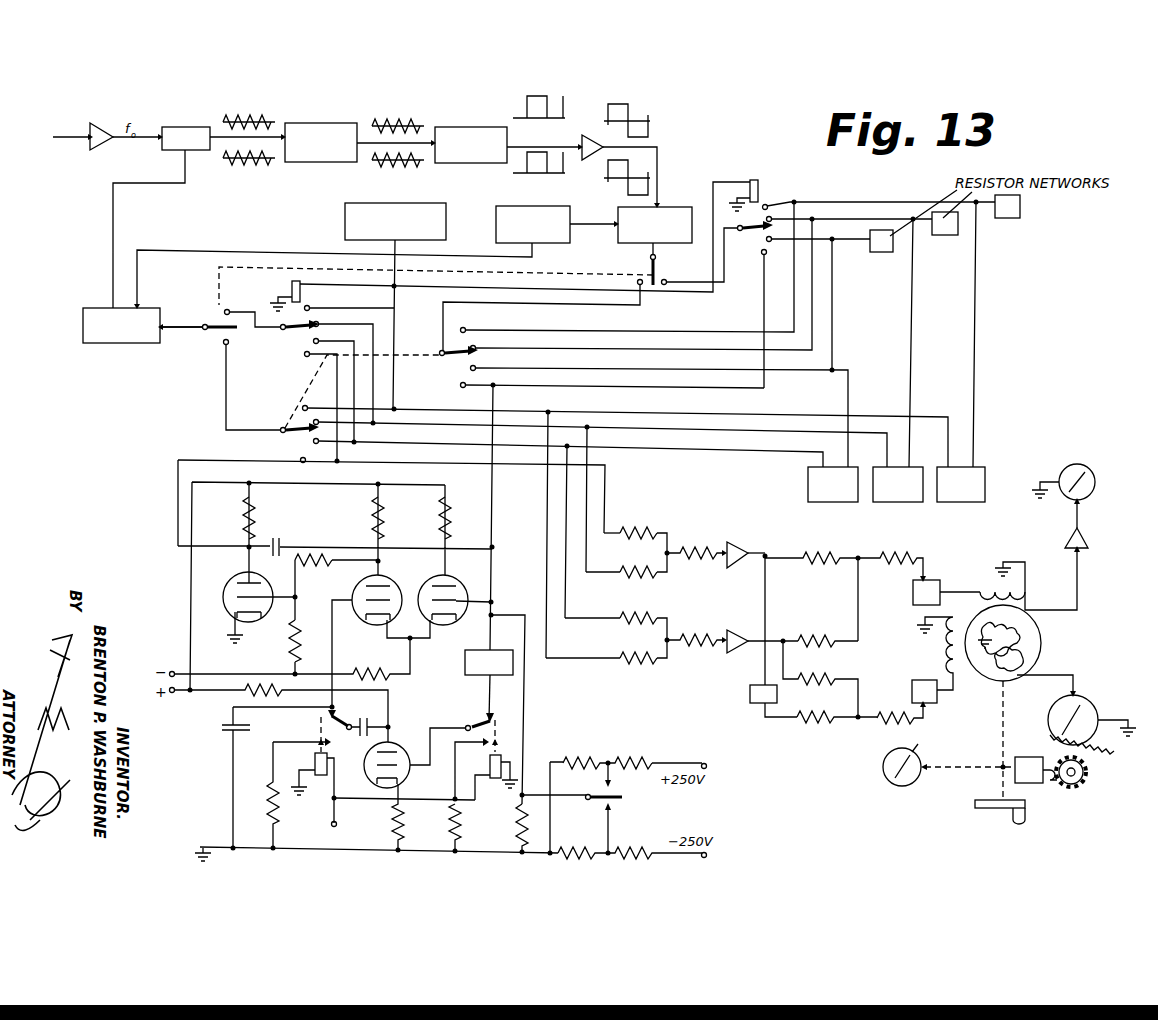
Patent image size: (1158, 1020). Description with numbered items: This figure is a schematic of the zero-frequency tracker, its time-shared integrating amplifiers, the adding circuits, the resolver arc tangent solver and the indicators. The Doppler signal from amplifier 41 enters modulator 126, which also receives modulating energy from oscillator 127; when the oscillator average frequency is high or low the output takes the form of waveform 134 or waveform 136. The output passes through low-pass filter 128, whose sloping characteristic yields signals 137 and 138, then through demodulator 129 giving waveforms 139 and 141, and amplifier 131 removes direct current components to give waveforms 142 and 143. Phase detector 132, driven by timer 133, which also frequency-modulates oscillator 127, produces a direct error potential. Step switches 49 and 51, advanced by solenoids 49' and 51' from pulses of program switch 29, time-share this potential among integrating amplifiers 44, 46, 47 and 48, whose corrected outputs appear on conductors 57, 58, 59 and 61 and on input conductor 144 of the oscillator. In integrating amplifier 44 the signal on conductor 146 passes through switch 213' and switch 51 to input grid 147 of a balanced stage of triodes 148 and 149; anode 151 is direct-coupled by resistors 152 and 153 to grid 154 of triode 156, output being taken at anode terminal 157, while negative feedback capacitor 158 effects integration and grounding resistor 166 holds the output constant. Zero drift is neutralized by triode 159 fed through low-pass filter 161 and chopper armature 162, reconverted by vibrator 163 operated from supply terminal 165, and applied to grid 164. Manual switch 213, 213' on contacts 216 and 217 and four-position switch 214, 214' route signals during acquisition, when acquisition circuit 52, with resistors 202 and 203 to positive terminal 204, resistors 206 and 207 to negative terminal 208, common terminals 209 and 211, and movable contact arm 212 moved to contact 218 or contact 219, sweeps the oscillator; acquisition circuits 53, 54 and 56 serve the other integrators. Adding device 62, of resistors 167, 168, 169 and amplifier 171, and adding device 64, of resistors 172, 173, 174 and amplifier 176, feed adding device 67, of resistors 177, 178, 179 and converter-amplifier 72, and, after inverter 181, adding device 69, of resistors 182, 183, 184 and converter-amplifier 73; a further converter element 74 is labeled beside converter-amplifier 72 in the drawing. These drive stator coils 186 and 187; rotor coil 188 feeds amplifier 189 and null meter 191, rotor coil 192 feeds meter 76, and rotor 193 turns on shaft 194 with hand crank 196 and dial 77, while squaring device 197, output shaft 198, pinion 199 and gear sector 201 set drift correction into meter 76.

The amplifier 41 is at (112, 126).
The modulator 126 is at (190, 122).
The waveform 134 is at (232, 116).
The waveform 136 is at (230, 168).
The low-pass filter 128 is at (331, 116).
The waveform 137 is at (410, 114).
The waveform 138 is at (376, 178).
The demodulator 129 is at (489, 116).
The waveform 139 is at (522, 100).
The waveform 141 is at (550, 174).
The waveform 142 is at (642, 102).
The waveform 143 is at (612, 186).
The amplifier 131 is at (604, 134).
The phase detector 132 is at (668, 208).
The timer 133 is at (524, 200).
The program switch 29 is at (344, 215).
The oscillator 127 is at (101, 307).
The input conductor 144 is at (204, 323).
The switch 213 is at (208, 338).
The contact 216 is at (229, 342).
The step switch 49 is at (303, 332).
The solenoid 49' is at (279, 294).
The manual four-position switch 214 is at (295, 435).
The manual four-position switch 214' is at (451, 358).
The contact 217 is at (638, 285).
The switch 213' is at (674, 272).
The input conductor 146 is at (657, 255).
The step switch 51 is at (757, 231).
The solenoid 51' is at (748, 184).
The acquisition circuit 53 is at (884, 255).
The acquisition circuit 54 is at (954, 238).
The acquisition circuit 56 is at (1014, 222).
The integrating amplifier 46 is at (834, 504).
The integrating amplifier 47 is at (901, 504).
The integrating amplifier 48 is at (964, 504).
The integrating amplifier 44 is at (170, 597).
The triode 156 is at (225, 589).
The anode terminal 157 is at (246, 553).
The negative feedback capacitor 158 is at (285, 532).
The resistor 152 is at (334, 564).
The anode 151 is at (374, 577).
The triode 149 is at (404, 585).
The input grid 147 is at (478, 583).
The triode 148 is at (450, 618).
The grid 154 is at (280, 605).
The resistor 153 is at (290, 653).
The grid 164 is at (348, 617).
The low-pass filter 161 is at (465, 661).
The triode 159 is at (422, 740).
The vibrator 163 is at (347, 721).
The chopper armature 162 is at (494, 716).
The supply terminal 165 is at (346, 824).
The grounding resistor 166 is at (518, 835).
The conductor 57 is at (605, 494).
The conductor 58 is at (566, 618).
The conductor 59 is at (592, 580).
The conductor 61 is at (548, 658).
The algebraically-adding device 62 is at (621, 559).
The algebraically-adding device 64 is at (636, 639).
The resistor 167 is at (655, 529).
The resistor 168 is at (654, 578).
The resistor 169 is at (706, 548).
The amplifier 171 is at (736, 566).
The resistor 172 is at (634, 616).
The resistor 173 is at (646, 665).
The resistor 174 is at (706, 623).
The amplifier 176 is at (750, 624).
The resistor 177 is at (836, 554).
The resistor 178 is at (818, 635).
The resistor 179 is at (900, 556).
The inverter 181 is at (748, 722).
The resistor 182 is at (826, 672).
The resistor 183 is at (812, 724).
The resistor 184 is at (896, 716).
The adding device 67 is at (824, 603).
The adding device 69 is at (833, 707).
The converter-amplifier 72 is at (912, 593).
The converter-amplifier 73 is at (912, 681).
The converter 74 is at (925, 580).
The stator coil 186 is at (982, 585).
The stator coil 187 is at (946, 645).
The rotor coil 188 is at (1006, 622).
The amplifier 189 is at (1066, 540).
The null meter 191 is at (1060, 467).
The rotor coil 192 is at (1002, 653).
The rotor 193 is at (1041, 650).
The shaft 194 is at (998, 697).
The hand crank 196 is at (990, 818).
The squaring device 197 is at (1032, 756).
The output shaft 198 is at (1054, 782).
The pinion 199 is at (1086, 776).
The gear sector 201 is at (1038, 740).
The resistor 202 is at (590, 754).
The resistor 203 is at (646, 763).
The positive terminal 204 is at (710, 766).
The resistor 206 is at (588, 844).
The resistor 207 is at (654, 850).
The negative terminal 208 is at (708, 855).
The common terminal 209 is at (637, 754).
The common terminal 211 is at (610, 854).
The movable contact arm 212 is at (602, 800).
The contact 218 is at (612, 775).
The contact 219 is at (610, 826).
The acquisition circuit 52 is at (724, 811).
The meter 76 is at (1096, 708).
The dial 77 is at (894, 754).